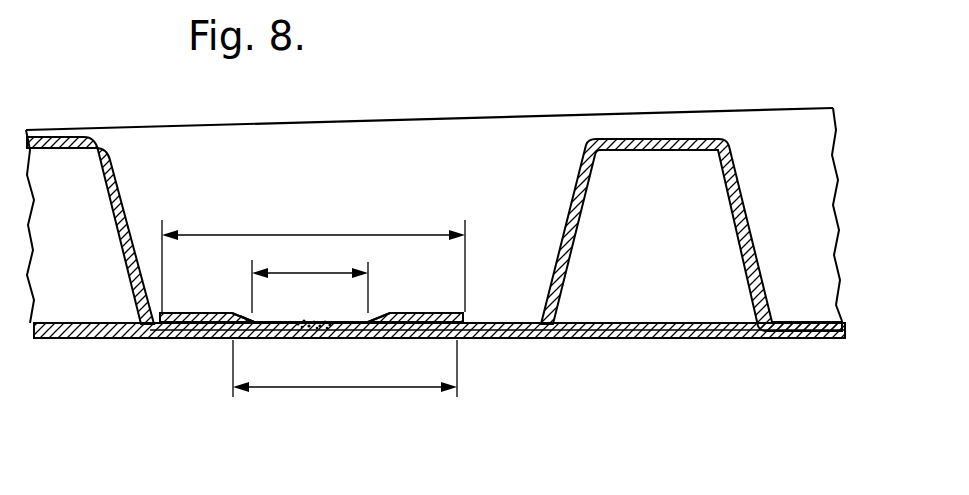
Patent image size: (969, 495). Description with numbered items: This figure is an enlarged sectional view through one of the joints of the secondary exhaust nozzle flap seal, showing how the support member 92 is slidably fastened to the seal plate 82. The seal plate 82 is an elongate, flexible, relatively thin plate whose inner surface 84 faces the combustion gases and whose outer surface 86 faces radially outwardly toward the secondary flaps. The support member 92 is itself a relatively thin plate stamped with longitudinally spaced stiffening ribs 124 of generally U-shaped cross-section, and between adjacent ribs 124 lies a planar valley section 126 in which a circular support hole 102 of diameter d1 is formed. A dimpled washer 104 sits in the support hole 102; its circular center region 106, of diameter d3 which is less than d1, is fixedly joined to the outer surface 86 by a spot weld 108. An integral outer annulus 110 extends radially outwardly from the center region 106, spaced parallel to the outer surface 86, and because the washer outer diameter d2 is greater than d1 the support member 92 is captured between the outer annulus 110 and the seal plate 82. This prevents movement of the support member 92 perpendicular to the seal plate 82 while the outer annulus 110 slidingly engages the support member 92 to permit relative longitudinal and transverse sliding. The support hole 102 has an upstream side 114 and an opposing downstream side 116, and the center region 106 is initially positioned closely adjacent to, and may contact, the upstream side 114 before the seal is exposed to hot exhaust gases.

The seal plate 82 is at (620, 342).
The inner surface 84 is at (720, 339).
The outer surface 86 is at (660, 339).
The support member 92 is at (560, 228).
The support hole 102 is at (397, 340).
The dimpled washer 104 is at (231, 306).
The center region 106 is at (347, 321).
The spot weld 108 is at (311, 330).
The outer annulus 110 is at (437, 312).
The upstream side 114 is at (241, 339).
The downstream side 116 is at (459, 339).
The stiffening rib 124 is at (118, 172).
The planar valley section 126 is at (505, 320).
The hole diameter d1 is at (334, 388).
The washer outer diameter d2 is at (330, 234).
The center region diameter d3 is at (297, 272).